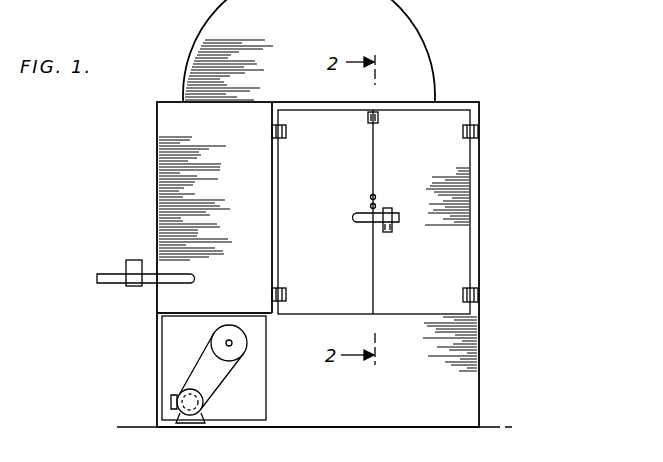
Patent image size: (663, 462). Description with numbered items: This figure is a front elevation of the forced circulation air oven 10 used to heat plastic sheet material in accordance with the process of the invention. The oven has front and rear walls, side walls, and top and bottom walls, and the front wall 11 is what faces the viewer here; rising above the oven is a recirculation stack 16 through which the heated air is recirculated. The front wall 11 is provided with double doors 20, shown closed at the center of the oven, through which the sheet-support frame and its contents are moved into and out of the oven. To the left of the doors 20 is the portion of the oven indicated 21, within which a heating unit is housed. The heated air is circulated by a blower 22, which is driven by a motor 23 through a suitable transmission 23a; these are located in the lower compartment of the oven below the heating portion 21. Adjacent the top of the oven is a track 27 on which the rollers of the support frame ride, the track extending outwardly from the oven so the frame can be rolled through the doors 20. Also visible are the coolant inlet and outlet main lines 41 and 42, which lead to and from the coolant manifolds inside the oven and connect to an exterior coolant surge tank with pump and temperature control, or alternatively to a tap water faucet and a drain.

The forced circulation air oven 10 is at (480, 187).
The front wall 11 is at (470, 382).
The recirculation stack 16 is at (413, 47).
The double doors 20 is at (375, 212).
The heating unit portion of the oven 21 is at (184, 207).
The blower 22 is at (226, 330).
The motor 23 is at (203, 404).
The transmission 23a is at (232, 367).
The track 27 is at (378, 119).
The coolant inlet main line 41 is at (375, 196).
The coolant outlet main line 42 is at (370, 205).